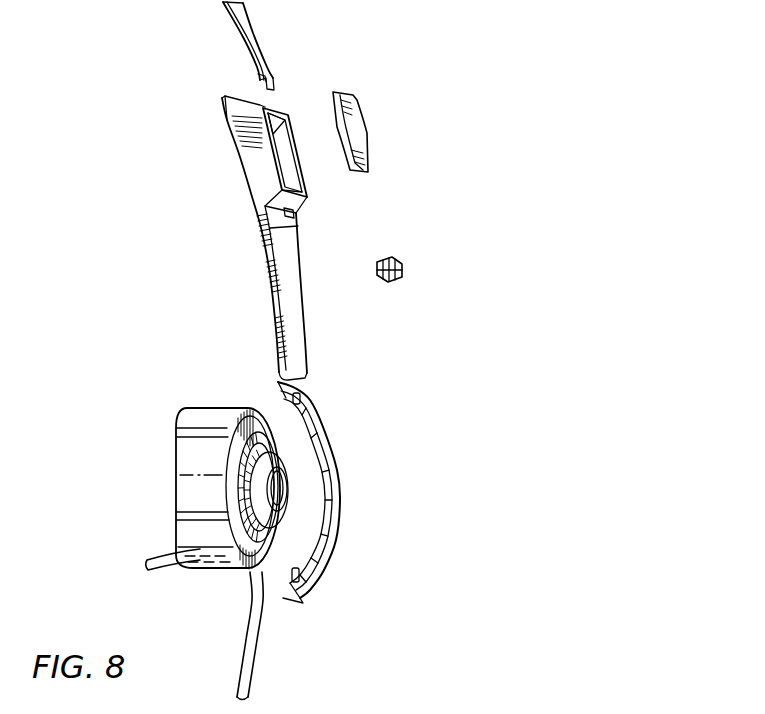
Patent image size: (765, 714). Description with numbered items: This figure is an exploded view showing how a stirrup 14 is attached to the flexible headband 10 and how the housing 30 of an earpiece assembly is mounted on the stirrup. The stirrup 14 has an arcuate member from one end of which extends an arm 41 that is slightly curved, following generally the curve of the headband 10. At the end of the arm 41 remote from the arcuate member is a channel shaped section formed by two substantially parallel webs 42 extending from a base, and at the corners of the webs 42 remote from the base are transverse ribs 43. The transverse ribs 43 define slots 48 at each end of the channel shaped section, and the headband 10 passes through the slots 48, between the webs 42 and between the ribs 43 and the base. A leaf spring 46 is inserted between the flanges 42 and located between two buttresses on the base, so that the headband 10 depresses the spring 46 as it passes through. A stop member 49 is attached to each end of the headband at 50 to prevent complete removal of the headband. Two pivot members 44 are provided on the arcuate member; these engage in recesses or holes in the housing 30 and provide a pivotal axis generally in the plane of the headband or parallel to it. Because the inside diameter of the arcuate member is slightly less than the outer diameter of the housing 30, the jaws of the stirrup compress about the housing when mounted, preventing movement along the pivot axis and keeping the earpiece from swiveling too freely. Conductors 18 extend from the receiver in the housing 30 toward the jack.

The flexible headband 10 is at (262, 19).
The attachment point of stop member 50 is at (256, 75).
The arm 41 is at (270, 278).
The webs 42 is at (293, 134).
The transverse ribs 43 is at (272, 113).
The slots 48 is at (297, 213).
The leaf spring 46 is at (366, 136).
The stop member 49 is at (412, 265).
The housing 30 is at (183, 405).
The stirrup 14 is at (342, 387).
The pivot members 44 is at (290, 396).
The conductors 18 is at (262, 680).